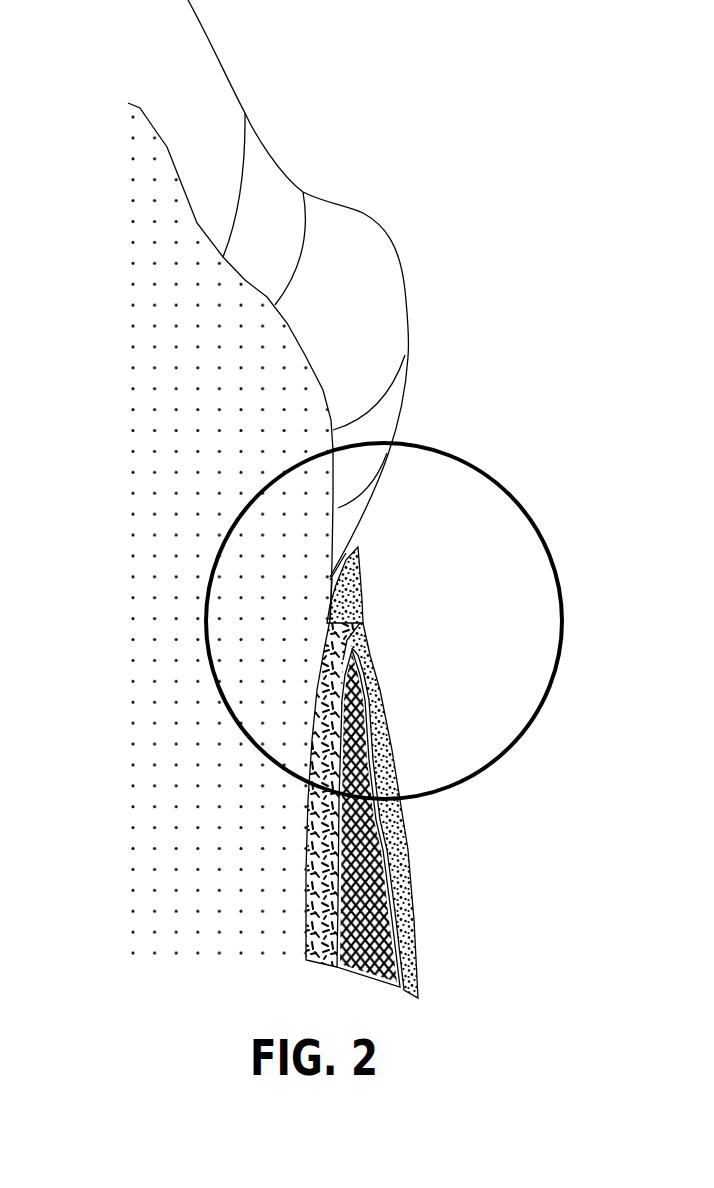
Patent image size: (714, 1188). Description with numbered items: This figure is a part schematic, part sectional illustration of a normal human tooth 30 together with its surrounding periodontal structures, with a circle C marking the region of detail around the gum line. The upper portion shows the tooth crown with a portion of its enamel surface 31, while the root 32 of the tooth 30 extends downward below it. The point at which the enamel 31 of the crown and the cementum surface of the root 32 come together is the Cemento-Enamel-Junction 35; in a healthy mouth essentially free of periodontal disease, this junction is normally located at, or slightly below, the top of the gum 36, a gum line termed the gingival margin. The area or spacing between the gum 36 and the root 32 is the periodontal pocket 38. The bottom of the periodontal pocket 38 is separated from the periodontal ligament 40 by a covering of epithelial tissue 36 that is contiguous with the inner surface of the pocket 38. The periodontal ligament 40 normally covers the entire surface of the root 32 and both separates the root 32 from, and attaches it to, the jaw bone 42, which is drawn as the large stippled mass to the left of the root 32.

The tooth 30 is at (342, 223).
The enamel surface 31 is at (402, 403).
The tooth root 32 is at (193, 890).
The Cemento-Enamel-Junction 35 is at (330, 580).
The gum 36 is at (365, 553).
The periodontal pocket 38 is at (332, 600).
The periodontal ligament 40 is at (308, 837).
The jaw bone 42 is at (360, 697).
The detail circle C is at (562, 628).